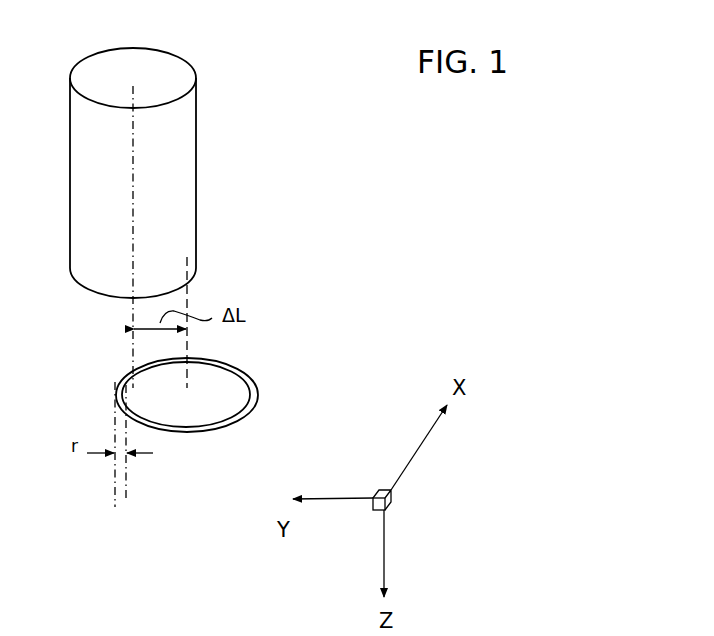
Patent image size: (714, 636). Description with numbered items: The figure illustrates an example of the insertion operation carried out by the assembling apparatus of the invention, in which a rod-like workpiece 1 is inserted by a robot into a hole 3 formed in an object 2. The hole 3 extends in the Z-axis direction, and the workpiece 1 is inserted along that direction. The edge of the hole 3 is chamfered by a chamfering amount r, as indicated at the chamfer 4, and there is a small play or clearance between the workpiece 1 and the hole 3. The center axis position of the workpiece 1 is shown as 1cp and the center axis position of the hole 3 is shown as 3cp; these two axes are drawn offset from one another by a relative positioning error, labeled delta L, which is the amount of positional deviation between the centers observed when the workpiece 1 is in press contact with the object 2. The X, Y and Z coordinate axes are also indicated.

The rod-like workpiece 1 is at (70, 243).
The center axis position of the workpiece 1cp is at (133, 82).
The object 2 is at (223, 487).
The hole 3 is at (226, 407).
The center axis position of the hole 3cp is at (187, 388).
The chamfer 4 is at (121, 391).